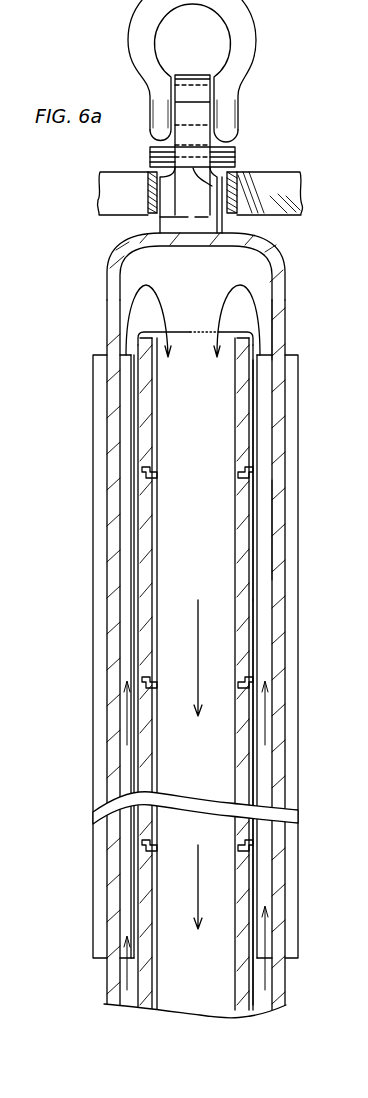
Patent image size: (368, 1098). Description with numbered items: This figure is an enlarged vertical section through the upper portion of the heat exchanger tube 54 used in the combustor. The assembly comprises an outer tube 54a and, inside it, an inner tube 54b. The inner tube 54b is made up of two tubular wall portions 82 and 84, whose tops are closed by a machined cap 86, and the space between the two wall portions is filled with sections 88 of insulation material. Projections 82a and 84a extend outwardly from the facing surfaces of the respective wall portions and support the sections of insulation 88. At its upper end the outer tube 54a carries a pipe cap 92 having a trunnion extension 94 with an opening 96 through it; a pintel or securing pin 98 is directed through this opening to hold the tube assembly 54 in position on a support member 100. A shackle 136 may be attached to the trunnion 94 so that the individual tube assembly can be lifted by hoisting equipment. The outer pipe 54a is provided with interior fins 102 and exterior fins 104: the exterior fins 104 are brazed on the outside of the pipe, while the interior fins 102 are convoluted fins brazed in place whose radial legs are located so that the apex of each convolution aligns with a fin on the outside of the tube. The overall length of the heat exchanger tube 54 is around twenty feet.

The shackle 136 is at (238, 44).
The trunnion extension 94 is at (224, 134).
The securing pin 98 is at (240, 150).
The opening 96 is at (240, 173).
The support member 100 is at (126, 182).
The pipe cap 92 is at (110, 280).
The heat exchanger tube 54 is at (291, 256).
The outer tube 54a is at (280, 320).
The inner tube 54b is at (250, 508).
The machined cap 86 is at (252, 342).
The sections of insulation material 88 is at (246, 418).
The tubular wall portion 84 is at (253, 460).
The projection 84a is at (254, 680).
The tubular wall portion 82 is at (242, 471).
The projection 82a is at (240, 683).
The exterior fins 104 is at (290, 547).
The interior fins 102 is at (266, 577).